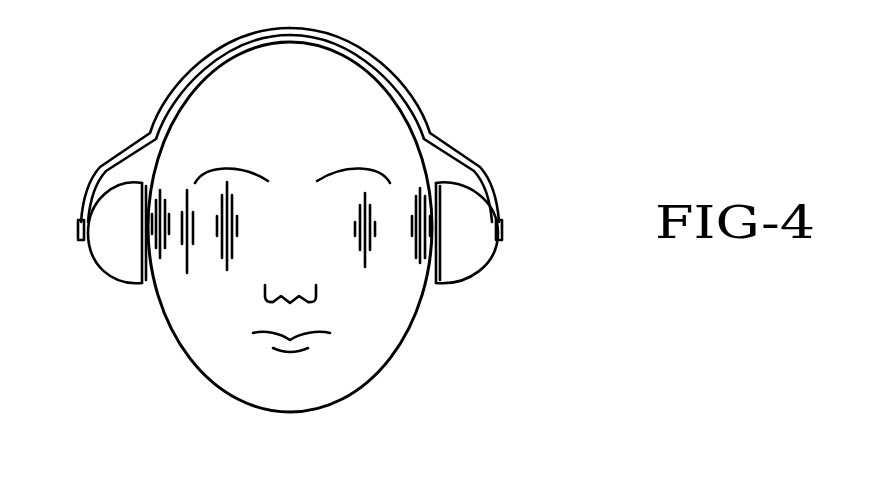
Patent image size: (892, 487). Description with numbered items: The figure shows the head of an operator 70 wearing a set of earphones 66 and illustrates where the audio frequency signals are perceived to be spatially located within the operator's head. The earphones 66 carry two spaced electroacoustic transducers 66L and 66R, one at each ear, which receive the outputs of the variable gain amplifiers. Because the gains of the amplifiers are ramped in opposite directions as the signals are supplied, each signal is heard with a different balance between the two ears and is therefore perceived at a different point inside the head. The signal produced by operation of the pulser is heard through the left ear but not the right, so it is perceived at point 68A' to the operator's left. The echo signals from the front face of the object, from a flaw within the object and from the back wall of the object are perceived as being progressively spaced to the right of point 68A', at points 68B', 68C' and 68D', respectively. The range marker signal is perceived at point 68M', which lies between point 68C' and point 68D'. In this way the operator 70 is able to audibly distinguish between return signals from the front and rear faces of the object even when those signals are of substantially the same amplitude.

The set of earphones 66 is at (180, 73).
The electroacoustic transducer 66R is at (108, 284).
The electroacoustic transducer 66L is at (470, 283).
The perceived location of audio frequency signal 68A 68A' is at (463, 180).
The perceived location of audio frequency signal 68B 68B' is at (423, 268).
The perceived location of audio frequency signal 68C 68C' is at (187, 297).
The perceived location of audio frequency signal 68D 68D' is at (131, 269).
The perceived location of marker signal 68M 68M' is at (140, 174).
The operator 70 is at (376, 335).